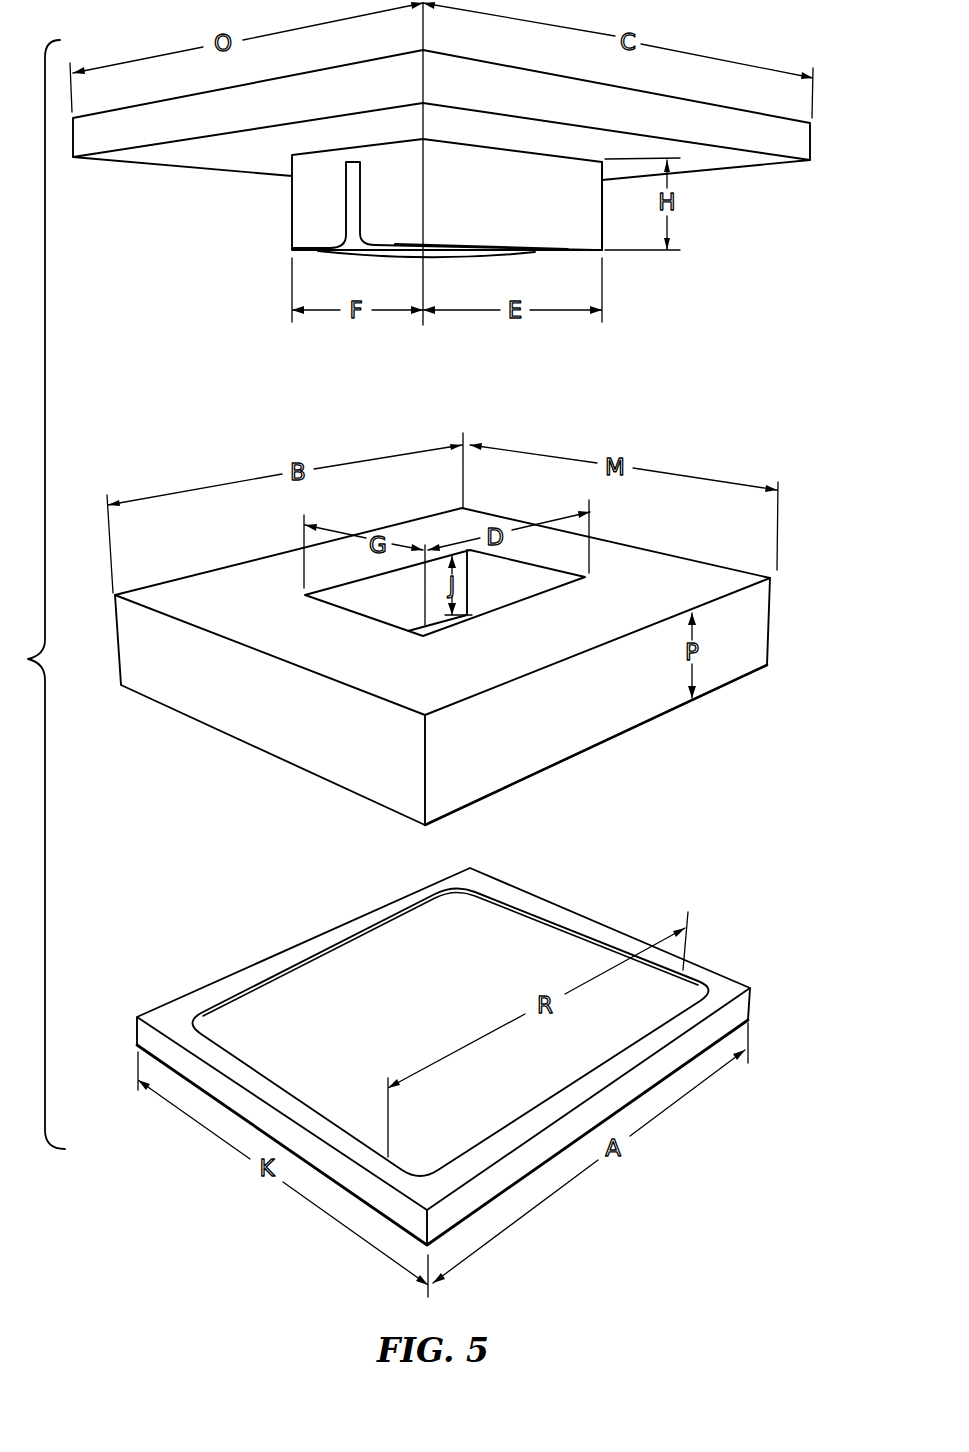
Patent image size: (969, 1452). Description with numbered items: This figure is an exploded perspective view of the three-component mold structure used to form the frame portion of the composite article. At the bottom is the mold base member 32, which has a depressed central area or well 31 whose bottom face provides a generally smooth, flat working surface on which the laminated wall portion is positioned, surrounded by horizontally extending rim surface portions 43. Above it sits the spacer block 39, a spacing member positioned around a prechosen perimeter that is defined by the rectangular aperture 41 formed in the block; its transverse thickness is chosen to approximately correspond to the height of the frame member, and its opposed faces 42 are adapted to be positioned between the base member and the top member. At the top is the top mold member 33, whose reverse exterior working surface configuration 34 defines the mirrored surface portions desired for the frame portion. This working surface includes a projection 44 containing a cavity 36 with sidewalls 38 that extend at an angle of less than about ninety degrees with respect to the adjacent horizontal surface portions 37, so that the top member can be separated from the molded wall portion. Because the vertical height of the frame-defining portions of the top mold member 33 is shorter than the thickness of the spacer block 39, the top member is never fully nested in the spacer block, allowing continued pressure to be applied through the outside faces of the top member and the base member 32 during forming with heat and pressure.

The well 31 is at (533, 940).
The mold base member 32 is at (755, 983).
The top mold member 33 is at (815, 160).
The reverse exterior working surface configuration 34 is at (733, 202).
The cavity 36 is at (350, 229).
The horizontal surface portions 37 is at (178, 158).
The sidewalls 38 is at (360, 211).
The spacer block 39 is at (775, 652).
The rectangular aperture 41 is at (513, 575).
The opposed faces 42 is at (655, 582).
The rim surface portions 43 is at (460, 880).
The projection 44 is at (587, 225).